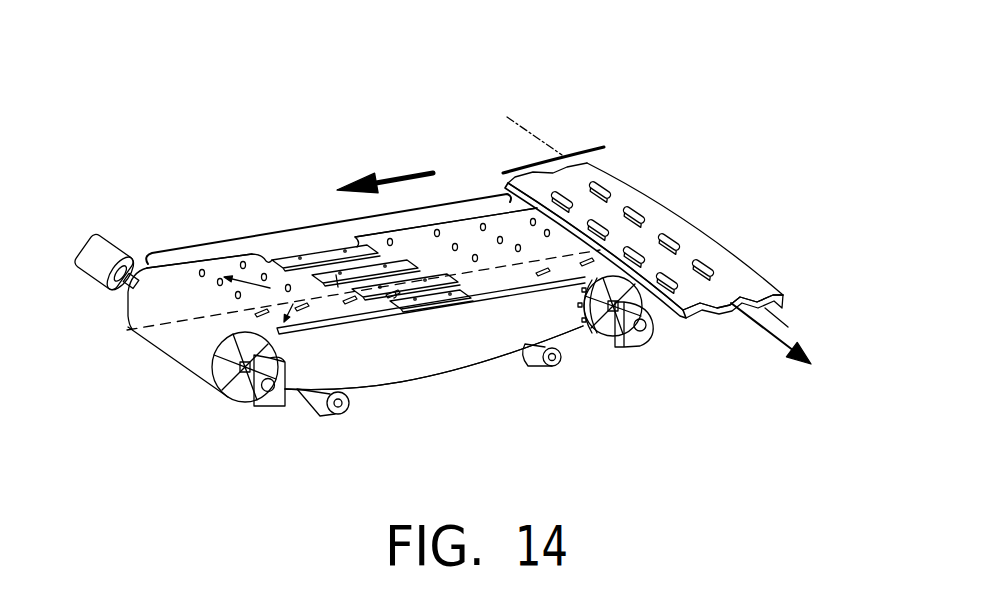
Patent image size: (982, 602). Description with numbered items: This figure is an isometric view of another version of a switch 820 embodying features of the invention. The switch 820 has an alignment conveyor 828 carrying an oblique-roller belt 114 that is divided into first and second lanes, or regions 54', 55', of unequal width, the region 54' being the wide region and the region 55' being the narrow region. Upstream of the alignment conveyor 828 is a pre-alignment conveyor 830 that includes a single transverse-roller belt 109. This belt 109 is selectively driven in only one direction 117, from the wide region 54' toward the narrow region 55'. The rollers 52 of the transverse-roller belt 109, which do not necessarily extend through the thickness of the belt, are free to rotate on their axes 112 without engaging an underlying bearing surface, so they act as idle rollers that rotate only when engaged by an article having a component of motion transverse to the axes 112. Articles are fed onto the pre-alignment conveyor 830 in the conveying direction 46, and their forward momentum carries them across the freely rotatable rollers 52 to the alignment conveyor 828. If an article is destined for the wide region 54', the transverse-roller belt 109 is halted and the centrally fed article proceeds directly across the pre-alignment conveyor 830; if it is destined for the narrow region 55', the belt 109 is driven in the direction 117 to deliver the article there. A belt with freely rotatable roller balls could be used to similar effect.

The switch 820 is at (334, 74).
The alignment conveyor 828 is at (328, 224).
The pre-alignment conveyor 830 is at (550, 150).
The roller axes 112 is at (532, 114).
The conveying direction 46 is at (392, 173).
The rollers 52 is at (668, 238).
The transverse-roller belt 109 is at (758, 281).
The direction 117 is at (767, 330).
The oblique-roller belt 114 is at (379, 303).
The wide region 54' is at (329, 271).
The narrow region 55' is at (382, 346).